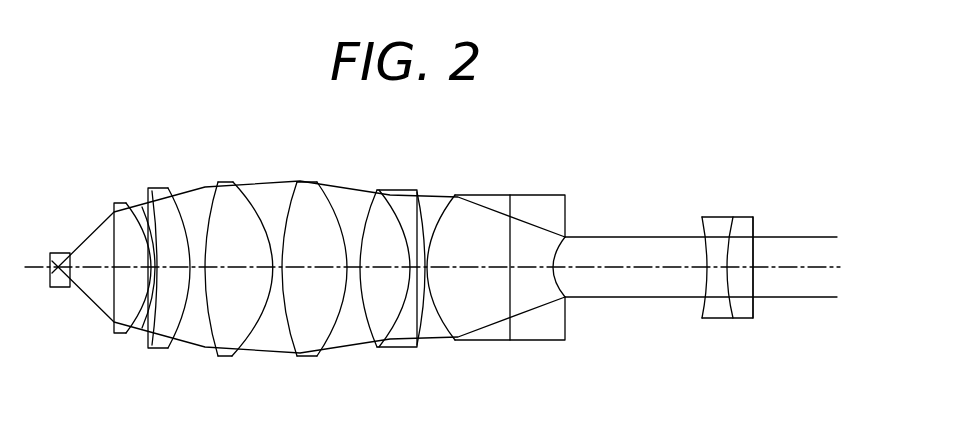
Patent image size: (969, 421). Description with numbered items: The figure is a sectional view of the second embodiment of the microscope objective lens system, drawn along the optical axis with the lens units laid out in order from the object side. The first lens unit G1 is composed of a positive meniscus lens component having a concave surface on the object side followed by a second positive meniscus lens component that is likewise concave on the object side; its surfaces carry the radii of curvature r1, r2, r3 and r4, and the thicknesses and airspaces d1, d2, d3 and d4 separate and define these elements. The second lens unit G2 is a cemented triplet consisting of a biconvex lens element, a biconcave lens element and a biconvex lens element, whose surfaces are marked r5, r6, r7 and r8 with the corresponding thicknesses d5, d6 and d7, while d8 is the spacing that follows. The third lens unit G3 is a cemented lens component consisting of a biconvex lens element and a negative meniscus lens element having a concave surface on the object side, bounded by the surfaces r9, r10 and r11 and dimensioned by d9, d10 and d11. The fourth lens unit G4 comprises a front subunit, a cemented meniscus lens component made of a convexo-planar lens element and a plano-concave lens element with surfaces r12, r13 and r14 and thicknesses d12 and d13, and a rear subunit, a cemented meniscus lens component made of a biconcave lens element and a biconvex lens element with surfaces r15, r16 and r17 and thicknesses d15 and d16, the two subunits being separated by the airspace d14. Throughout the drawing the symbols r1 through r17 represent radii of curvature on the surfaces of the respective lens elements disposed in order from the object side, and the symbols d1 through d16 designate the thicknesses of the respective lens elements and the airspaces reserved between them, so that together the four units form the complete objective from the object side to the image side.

The first lens unit G1 is at (185, 147).
The second lens unit G2 is at (350, 147).
The third lens unit G3 is at (463, 147).
The fourth lens unit G4 is at (770, 147).
The radius of curvature r1 is at (123, 210).
The radius of curvature r2 is at (143, 212).
The radius of curvature r3 is at (154, 194).
The radius of curvature r4 is at (170, 194).
The radius of curvature r5 is at (213, 190).
The radius of curvature r6 is at (255, 205).
The radius of curvature r7 is at (299, 190).
The radius of curvature r8 is at (328, 193).
The radius of curvature r9 is at (379, 197).
The radius of curvature r10 is at (400, 196).
The radius of curvature r11 is at (420, 198).
The radius of curvature r12 is at (450, 200).
The radius of curvature r13 is at (511, 196).
The radius of curvature r14 is at (558, 205).
The radius of curvature r15 is at (702, 225).
The radius of curvature r16 is at (730, 220).
The radius of curvature r17 is at (752, 222).
The thickness or airspace d1 is at (97, 302).
The thickness or airspace d2 is at (130, 318).
The thickness or airspace d3 is at (153, 332).
The thickness or airspace d4 is at (197, 310).
The thickness or airspace d5 is at (222, 318).
The thickness or airspace d6 is at (276, 292).
The thickness or airspace d7 is at (304, 300).
The thickness or airspace d8 is at (348, 290).
The thickness or airspace d9 is at (375, 295).
The thickness or airspace d10 is at (414, 300).
The thickness or airspace d11 is at (440, 290).
The thickness or airspace d12 is at (470, 285).
The thickness or airspace d13 is at (538, 285).
The thickness or airspace d14 is at (609, 268).
The thickness or airspace d15 is at (712, 282).
The thickness or airspace d16 is at (750, 290).